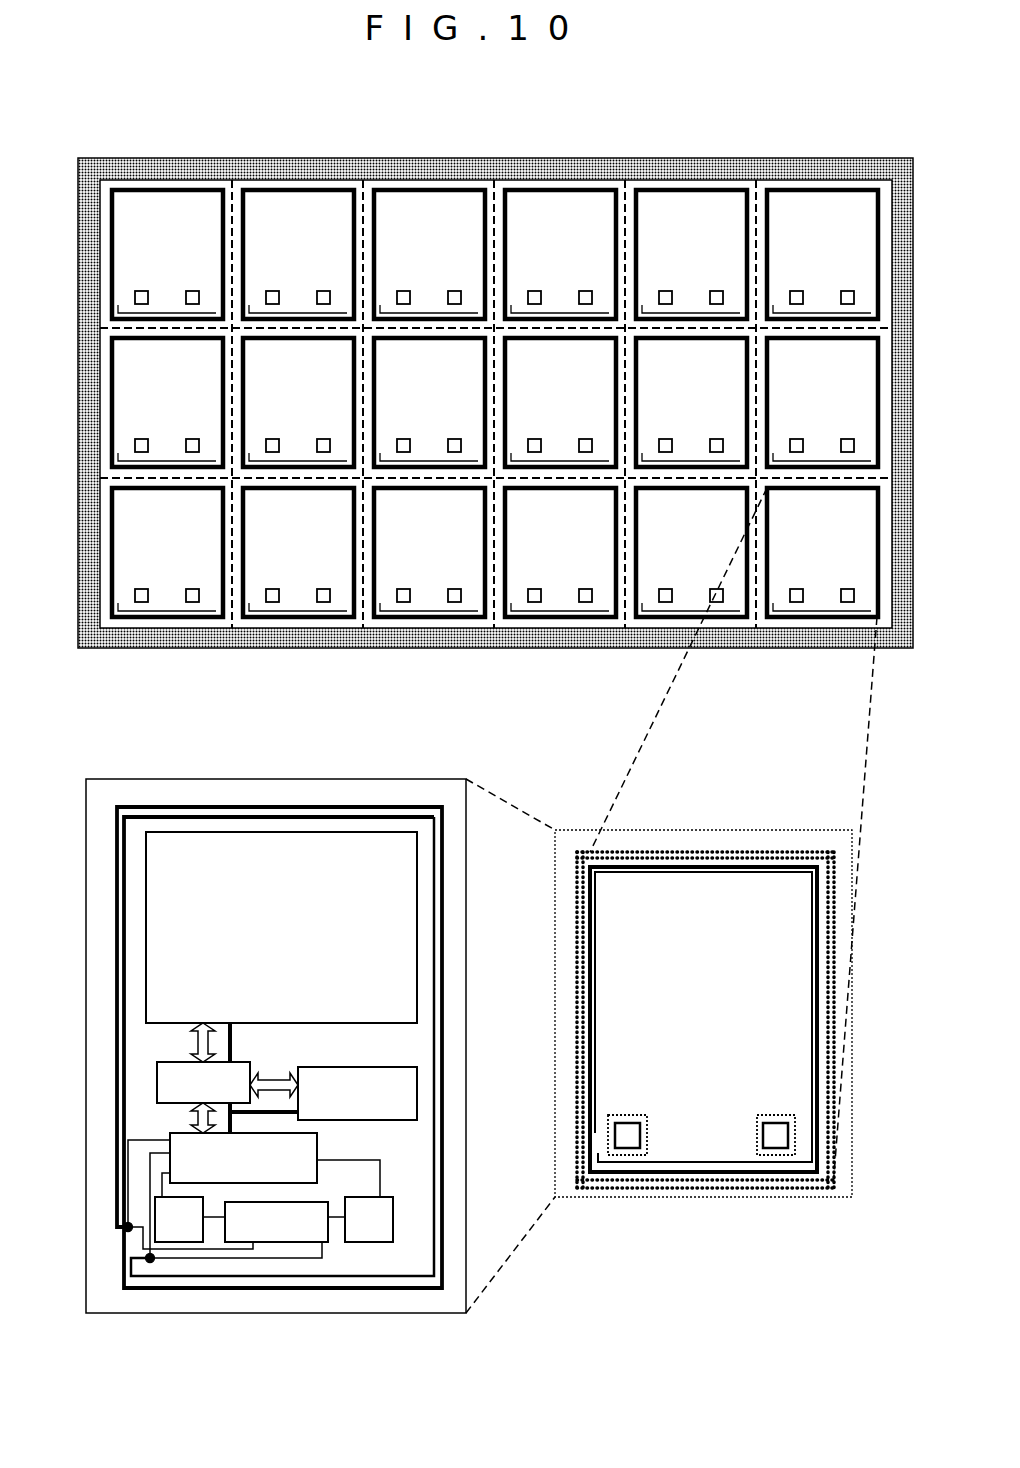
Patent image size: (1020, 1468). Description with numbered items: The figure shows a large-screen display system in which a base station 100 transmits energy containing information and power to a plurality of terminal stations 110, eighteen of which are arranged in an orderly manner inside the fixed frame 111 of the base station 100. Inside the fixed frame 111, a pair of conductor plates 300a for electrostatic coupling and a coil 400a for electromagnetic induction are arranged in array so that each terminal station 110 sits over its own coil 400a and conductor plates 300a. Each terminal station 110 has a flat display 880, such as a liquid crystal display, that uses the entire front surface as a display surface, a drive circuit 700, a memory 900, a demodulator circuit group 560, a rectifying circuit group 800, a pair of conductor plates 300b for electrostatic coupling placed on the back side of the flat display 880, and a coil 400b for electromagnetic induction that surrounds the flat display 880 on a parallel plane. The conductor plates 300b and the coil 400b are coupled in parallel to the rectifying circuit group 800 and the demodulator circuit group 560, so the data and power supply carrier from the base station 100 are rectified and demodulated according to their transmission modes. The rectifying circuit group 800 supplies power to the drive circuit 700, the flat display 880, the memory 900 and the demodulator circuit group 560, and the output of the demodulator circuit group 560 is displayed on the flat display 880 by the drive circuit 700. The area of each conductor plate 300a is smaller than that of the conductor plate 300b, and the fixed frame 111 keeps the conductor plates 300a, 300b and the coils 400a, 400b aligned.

The base station 100 is at (203, 158).
The fixed frame 111 is at (827, 166).
The coil for electromagnetic induction 400a is at (120, 198).
The pair of conductor plates for electrostatic coupling 300a is at (141, 290).
The terminal station 110 is at (181, 779).
The coil for electromagnetic induction 400b is at (293, 807).
The flat display 880 is at (372, 832).
The drive circuit 700 is at (157, 1088).
The memory 900 is at (417, 1091).
The demodulator circuit group 560 is at (317, 1137).
The rectifying circuit group 800 is at (283, 1202).
The pair of conductor plates for electrostatic coupling 300b is at (182, 1242).